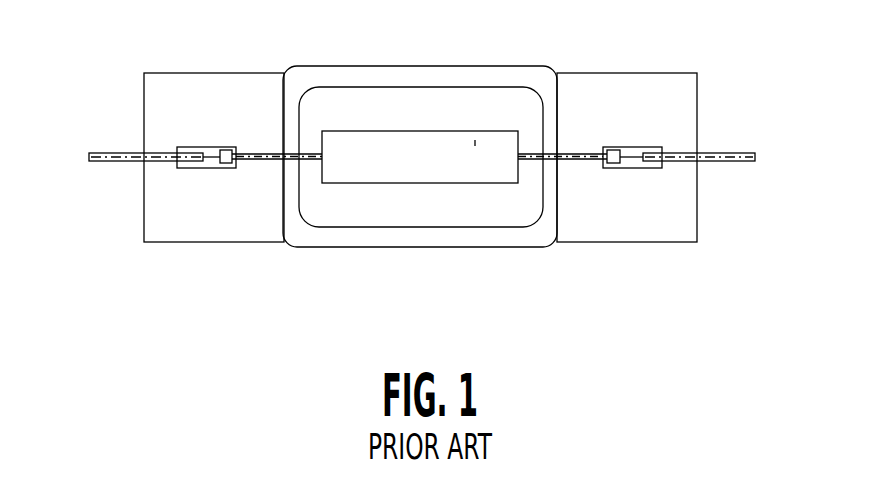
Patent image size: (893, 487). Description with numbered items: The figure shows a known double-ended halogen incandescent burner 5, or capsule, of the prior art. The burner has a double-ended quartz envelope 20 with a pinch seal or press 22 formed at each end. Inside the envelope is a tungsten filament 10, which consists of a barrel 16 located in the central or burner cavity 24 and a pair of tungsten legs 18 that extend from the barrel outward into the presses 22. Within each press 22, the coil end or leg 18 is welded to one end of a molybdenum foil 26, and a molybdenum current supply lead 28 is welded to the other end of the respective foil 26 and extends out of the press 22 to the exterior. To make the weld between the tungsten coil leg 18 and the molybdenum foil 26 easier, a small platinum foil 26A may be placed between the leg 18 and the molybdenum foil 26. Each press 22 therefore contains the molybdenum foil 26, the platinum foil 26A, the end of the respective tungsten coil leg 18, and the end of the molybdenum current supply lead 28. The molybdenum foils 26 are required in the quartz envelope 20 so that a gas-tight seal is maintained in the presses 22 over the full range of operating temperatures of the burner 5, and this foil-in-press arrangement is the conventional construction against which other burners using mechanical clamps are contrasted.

The burner 5 is at (112, 303).
The tungsten filament 10 is at (391, 131).
The barrel 16 is at (475, 143).
The tungsten legs 18 is at (265, 156).
The quartz envelope 20 is at (329, 64).
The press 22 is at (183, 103).
The burner cavity 24 is at (416, 214).
The molybdenum foil 26 is at (212, 160).
The platinum foil 26A is at (224, 170).
The molybdenum current supply leads 28 is at (131, 163).